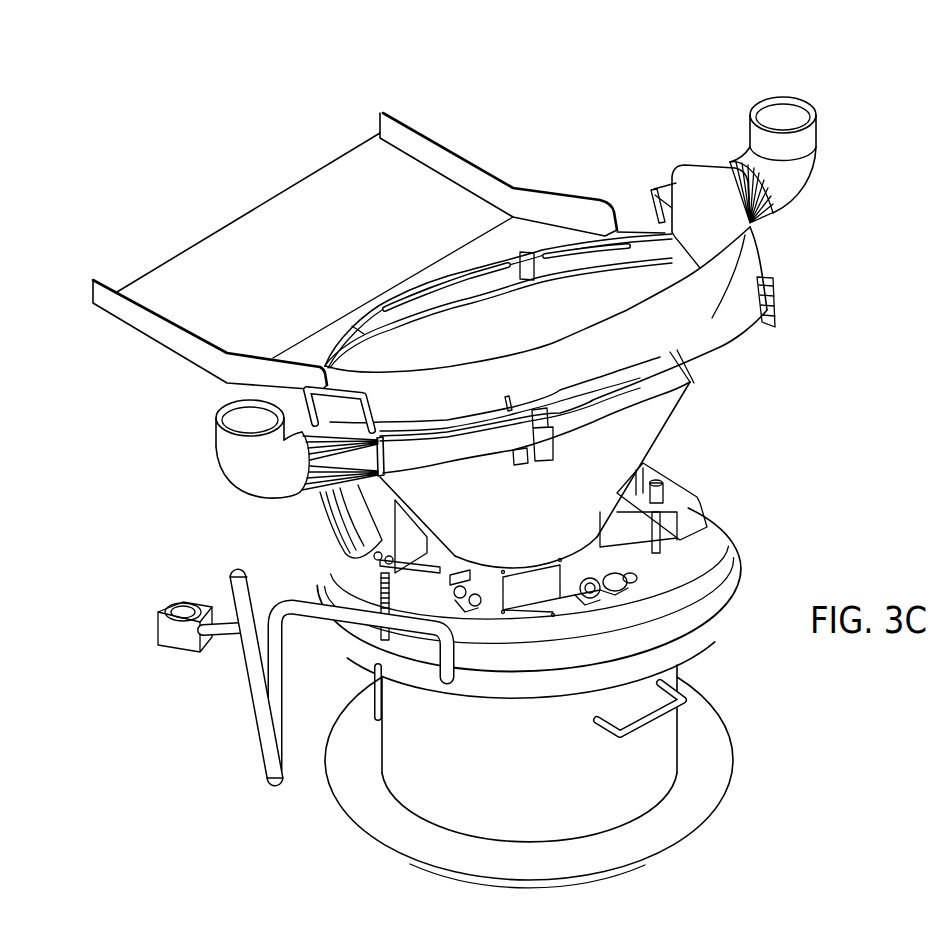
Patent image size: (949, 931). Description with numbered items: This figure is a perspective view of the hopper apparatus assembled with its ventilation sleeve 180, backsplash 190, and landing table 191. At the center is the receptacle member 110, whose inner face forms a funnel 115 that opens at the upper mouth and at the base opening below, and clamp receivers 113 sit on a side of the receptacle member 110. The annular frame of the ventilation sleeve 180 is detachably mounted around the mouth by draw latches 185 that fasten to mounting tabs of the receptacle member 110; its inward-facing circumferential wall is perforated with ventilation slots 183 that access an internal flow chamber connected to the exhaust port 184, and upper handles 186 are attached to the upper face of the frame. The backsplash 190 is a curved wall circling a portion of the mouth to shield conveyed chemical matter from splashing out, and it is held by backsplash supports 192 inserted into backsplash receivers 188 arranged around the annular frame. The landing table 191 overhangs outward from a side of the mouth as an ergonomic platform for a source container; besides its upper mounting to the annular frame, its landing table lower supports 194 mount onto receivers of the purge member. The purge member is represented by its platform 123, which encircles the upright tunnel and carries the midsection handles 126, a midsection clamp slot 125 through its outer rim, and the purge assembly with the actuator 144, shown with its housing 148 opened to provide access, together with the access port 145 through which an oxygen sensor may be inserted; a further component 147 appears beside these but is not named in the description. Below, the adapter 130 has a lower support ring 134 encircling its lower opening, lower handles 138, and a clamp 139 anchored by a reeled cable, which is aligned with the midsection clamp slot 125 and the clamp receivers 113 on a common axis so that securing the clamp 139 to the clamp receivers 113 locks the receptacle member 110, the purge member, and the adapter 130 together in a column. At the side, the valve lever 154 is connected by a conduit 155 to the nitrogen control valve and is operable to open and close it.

The receptacle member 110 is at (678, 403).
The clamp receivers 113 is at (377, 560).
The funnel 115 is at (480, 333).
The platform 123 is at (725, 605).
The midsection clamp slot 125 is at (343, 625).
The midsection handles 126 is at (700, 498).
The adapter 130 is at (677, 720).
The lower support ring 134 is at (698, 835).
The lower handles 138 is at (620, 736).
The clamp 139 is at (385, 712).
The actuator 144 is at (627, 583).
The access port 145 is at (663, 523).
The frame 147 is at (667, 540).
The housing 148 is at (697, 583).
The valve lever 154 is at (178, 653).
The conduit 155 is at (273, 787).
The ventilation sleeve 180 is at (757, 287).
The ventilation slots 183 is at (473, 278).
The exhaust port 184 is at (817, 127).
The draw latches 185 is at (773, 320).
The upper handles 186 is at (653, 188).
The backsplash receivers 188 is at (513, 462).
The backsplash 190 is at (727, 340).
The landing table 191 is at (280, 195).
The backsplash supports 192 is at (517, 395).
The landing table lower supports 194 is at (323, 505).